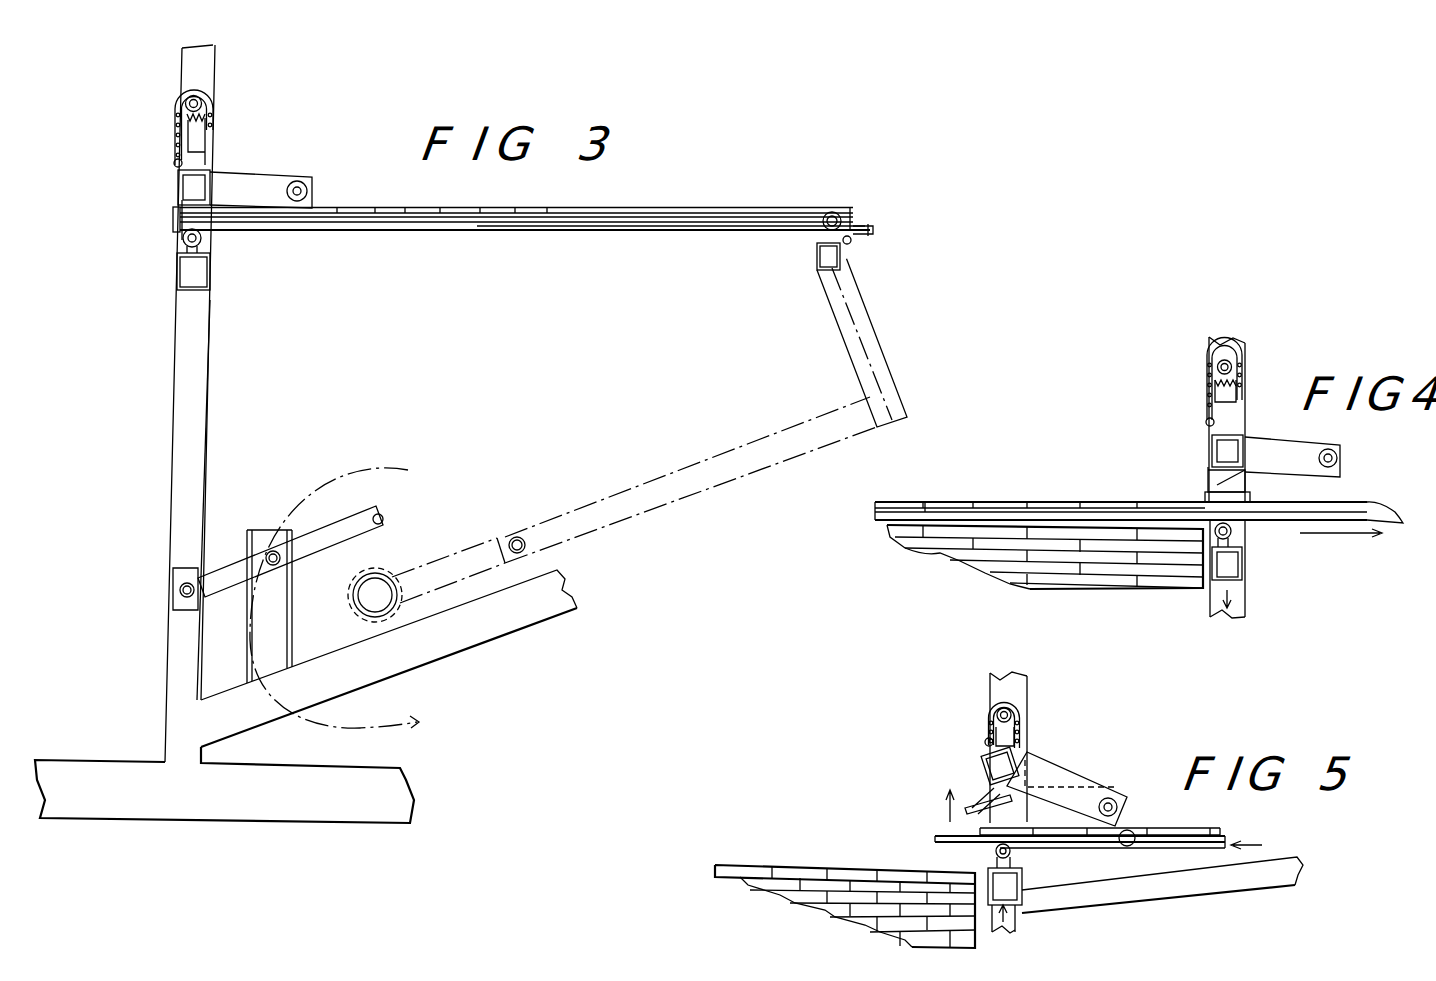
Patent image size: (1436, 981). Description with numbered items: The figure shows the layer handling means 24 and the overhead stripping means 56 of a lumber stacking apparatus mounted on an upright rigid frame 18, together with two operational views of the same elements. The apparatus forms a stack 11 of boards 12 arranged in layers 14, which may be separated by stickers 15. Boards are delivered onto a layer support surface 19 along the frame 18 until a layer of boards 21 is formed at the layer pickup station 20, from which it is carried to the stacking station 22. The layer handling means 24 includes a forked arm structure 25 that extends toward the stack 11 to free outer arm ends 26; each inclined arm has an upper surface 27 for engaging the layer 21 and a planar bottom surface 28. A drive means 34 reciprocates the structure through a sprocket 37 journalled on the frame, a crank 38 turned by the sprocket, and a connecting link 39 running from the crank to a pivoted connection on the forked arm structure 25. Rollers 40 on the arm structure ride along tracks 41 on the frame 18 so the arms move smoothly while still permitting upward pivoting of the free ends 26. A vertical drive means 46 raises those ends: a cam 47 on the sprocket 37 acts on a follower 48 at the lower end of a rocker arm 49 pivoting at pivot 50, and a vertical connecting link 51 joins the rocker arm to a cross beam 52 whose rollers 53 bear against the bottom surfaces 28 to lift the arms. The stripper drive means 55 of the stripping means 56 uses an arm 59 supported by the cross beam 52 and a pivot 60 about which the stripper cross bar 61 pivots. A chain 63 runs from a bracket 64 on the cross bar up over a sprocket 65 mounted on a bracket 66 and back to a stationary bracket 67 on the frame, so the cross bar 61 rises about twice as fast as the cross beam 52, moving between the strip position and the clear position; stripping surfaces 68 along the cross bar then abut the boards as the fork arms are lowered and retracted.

In FIG. 4, the stack 11 is at (1060, 580).
In FIG. 5, the stack 11 is at (815, 866).
In FIG. 3, the boards 12 is at (345, 212).
In FIG. 4, the boards 12 is at (1035, 485).
In FIG. 5, the boards 12 is at (1155, 828).
In FIG. 4, the layers 14 is at (990, 550).
In FIG. 5, the layers 14 is at (902, 920).
In FIG. 4, the stickers 15 is at (888, 538).
In FIG. 5, the stickers 15 is at (762, 887).
In FIG. 3, the upright rigid frame 18 is at (208, 75).
In FIG. 4, the upright rigid frame 18 is at (1240, 346).
In FIG. 5, the upright rigid frame 18 is at (1030, 689).
In FIG. 3, the layer support surface 19 is at (410, 222).
In FIG. 3, the layer pickup station 20 is at (425, 207).
In FIG. 3, the layer of boards 21 is at (458, 207).
In FIG. 4, the layer of boards 21 is at (1097, 502).
In FIG. 5, the layer of boards 21 is at (1210, 826).
In FIG. 4, the stacking station 22 is at (966, 482).
In FIG. 5, the stacking station 22 is at (841, 855).
In FIG. 3, the layer handling means 24 is at (579, 243).
In FIG. 4, the layer handling means 24 is at (1302, 538).
In FIG. 3, the forked arm structure 25 is at (680, 232).
In FIG. 4, the forked arm structure 25 is at (1375, 504).
In FIG. 5, the forked arm structure 25 is at (1235, 835).
In FIG. 3, the free outer arm ends 26 is at (179, 231).
In FIG. 4, the free outer arm ends 26 is at (926, 502).
In FIG. 5, the free outer arm ends 26 is at (940, 836).
In FIG. 3, the upper surface 27 is at (433, 222).
In FIG. 4, the upper surface 27 is at (1305, 502).
In FIG. 5, the upper surface 27 is at (1120, 842).
In FIG. 3, the planar bottom surface 28 is at (530, 233).
In FIG. 4, the planar bottom surface 28 is at (1393, 530).
In FIG. 5, the planar bottom surface 28 is at (1040, 843).
In FIG. 3, the drive means 34 is at (487, 540).
In FIG. 3, the sprocket 37 is at (407, 472).
In FIG. 3, the crank 38 is at (442, 556).
In FIG. 3, the connecting link 39 is at (632, 490).
In FIG. 3, the rollers 40 is at (836, 214).
In FIG. 3, the tracks 41 is at (770, 232).
In FIG. 3, the vertical drive means 46 is at (215, 465).
In FIG. 3, the cam 47 is at (314, 602).
In FIG. 3, the follower 48 is at (386, 515).
In FIG. 3, the rocker arm 49 is at (330, 532).
In FIG. 3, the pivot 50 is at (267, 557).
In FIG. 3, the vertical connecting link 51 is at (203, 490).
In FIG. 3, the cross beam 52 is at (212, 281).
In FIG. 4, the cross beam 52 is at (1243, 565).
In FIG. 5, the cross beam 52 is at (1024, 883).
In FIG. 3, the rollers 53 is at (205, 240).
In FIG. 4, the rollers 53 is at (1233, 534).
In FIG. 5, the rollers 53 is at (995, 852).
In FIG. 3, the stripper drive means 55 is at (165, 120).
In FIG. 4, the stripper drive means 55 is at (1260, 369).
In FIG. 5, the stripper drive means 55 is at (1039, 717).
In FIG. 3, the overhead stripping means 56 is at (270, 171).
In FIG. 4, the overhead stripping means 56 is at (1295, 445).
In FIG. 5, the overhead stripping means 56 is at (1071, 774).
In FIG. 3, the arm 59 is at (246, 206).
In FIG. 4, the arm 59 is at (1225, 488).
In FIG. 5, the arm 59 is at (1086, 797).
In FIG. 3, the pivot 60 is at (312, 186).
In FIG. 4, the pivot 60 is at (1338, 457).
In FIG. 5, the pivot 60 is at (986, 766).
In FIG. 3, the stripper cross bar 61 is at (180, 188).
In FIG. 4, the stripper cross bar 61 is at (1213, 448).
In FIG. 5, the stripper cross bar 61 is at (1000, 766).
In FIG. 3, the chain 63 is at (175, 143).
In FIG. 4, the chain 63 is at (1206, 396).
In FIG. 5, the chain 63 is at (1023, 731).
In FIG. 3, the bracket 64 is at (180, 163).
In FIG. 4, the bracket 64 is at (1206, 424).
In FIG. 5, the bracket 64 is at (988, 740).
In FIG. 3, the sprocket 65 is at (208, 103).
In FIG. 4, the sprocket 65 is at (1215, 369).
In FIG. 5, the sprocket 65 is at (993, 717).
In FIG. 3, the bracket 66 is at (208, 130).
In FIG. 4, the bracket 66 is at (1240, 398).
In FIG. 5, the bracket 66 is at (1020, 748).
In FIG. 3, the stationary bracket 67 is at (213, 122).
In FIG. 4, the stationary bracket 67 is at (1244, 388).
In FIG. 3, the stripping surfaces 68 is at (174, 212).
In FIG. 4, the stripping surfaces 68 is at (1208, 476).
In FIG. 5, the stripping surfaces 68 is at (975, 790).